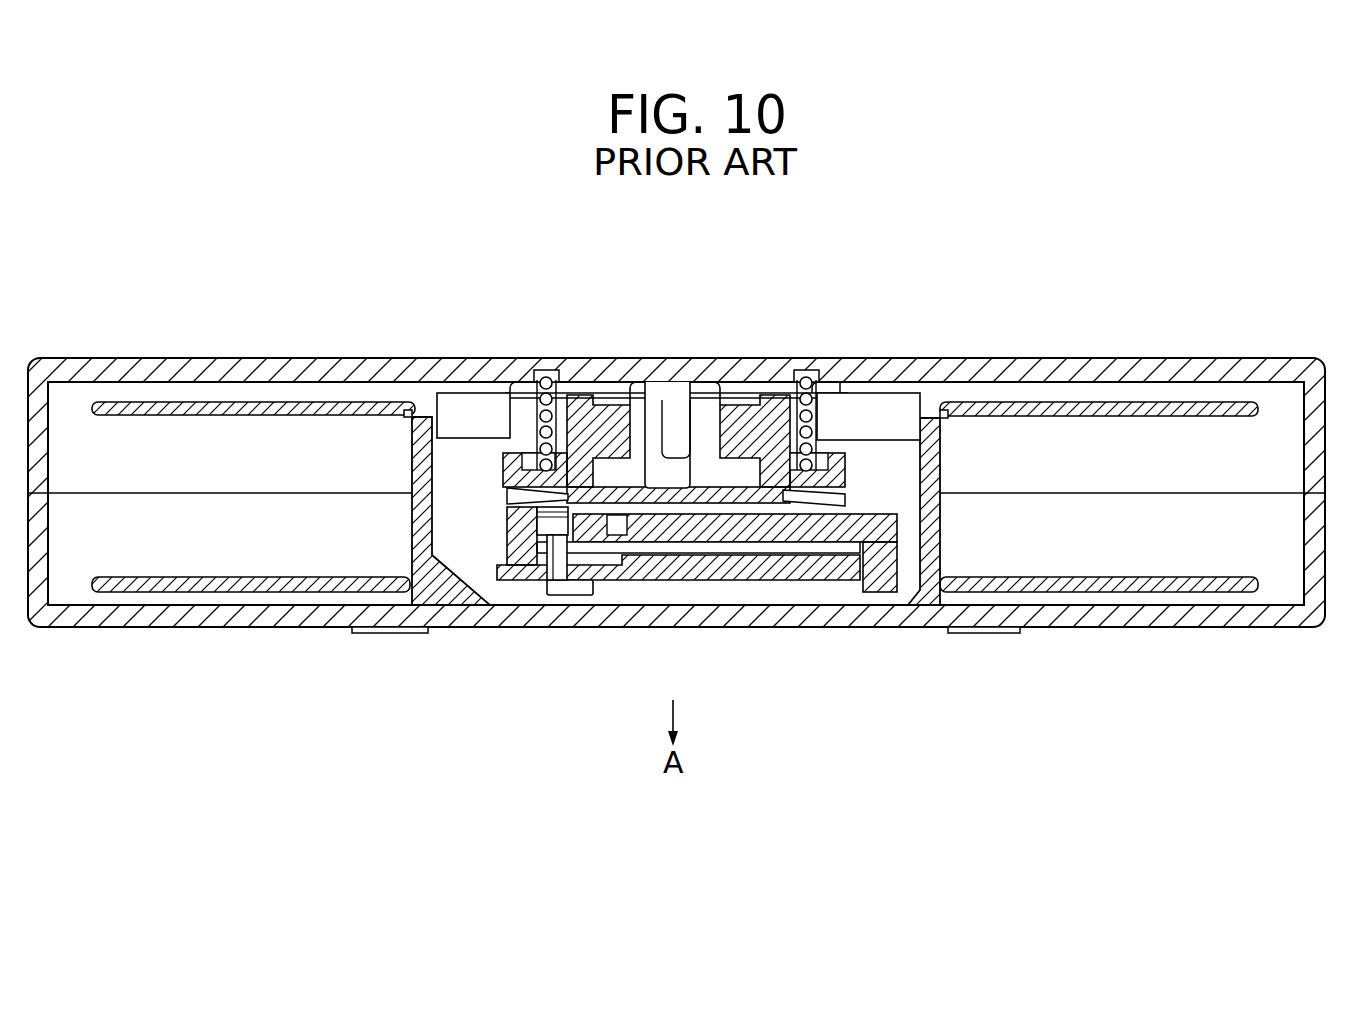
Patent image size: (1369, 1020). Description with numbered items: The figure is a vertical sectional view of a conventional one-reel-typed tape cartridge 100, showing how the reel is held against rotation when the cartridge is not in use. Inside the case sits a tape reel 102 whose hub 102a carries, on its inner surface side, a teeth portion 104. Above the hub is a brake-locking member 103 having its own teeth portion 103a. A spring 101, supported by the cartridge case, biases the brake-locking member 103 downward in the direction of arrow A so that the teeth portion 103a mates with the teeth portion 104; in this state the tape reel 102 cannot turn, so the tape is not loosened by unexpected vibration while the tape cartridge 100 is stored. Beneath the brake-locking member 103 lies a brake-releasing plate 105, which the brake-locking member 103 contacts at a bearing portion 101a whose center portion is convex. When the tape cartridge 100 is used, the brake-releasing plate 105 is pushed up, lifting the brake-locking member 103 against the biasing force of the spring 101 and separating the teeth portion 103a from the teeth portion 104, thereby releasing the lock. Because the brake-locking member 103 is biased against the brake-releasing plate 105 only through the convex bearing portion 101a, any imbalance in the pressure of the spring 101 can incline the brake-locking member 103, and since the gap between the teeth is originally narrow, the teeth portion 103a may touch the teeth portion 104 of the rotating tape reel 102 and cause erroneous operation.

The tape cartridge 100 is at (1224, 357).
The spring 101 is at (830, 410).
The bearing portion 101a is at (657, 500).
The tape reel 102 is at (948, 532).
The hub 102a is at (432, 525).
The brake-locking member 103 is at (846, 470).
The teeth portion 103a is at (820, 494).
The teeth portion 104 is at (515, 538).
The brake-releasing plate 105 is at (828, 533).